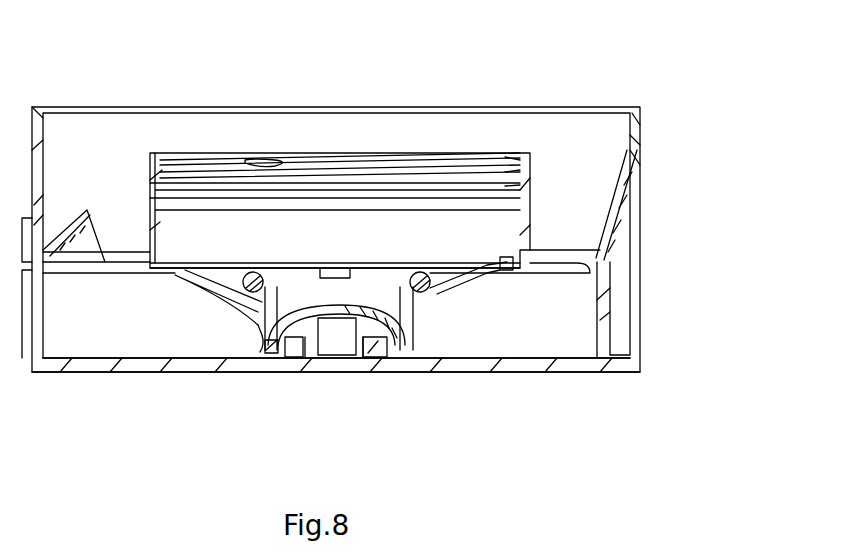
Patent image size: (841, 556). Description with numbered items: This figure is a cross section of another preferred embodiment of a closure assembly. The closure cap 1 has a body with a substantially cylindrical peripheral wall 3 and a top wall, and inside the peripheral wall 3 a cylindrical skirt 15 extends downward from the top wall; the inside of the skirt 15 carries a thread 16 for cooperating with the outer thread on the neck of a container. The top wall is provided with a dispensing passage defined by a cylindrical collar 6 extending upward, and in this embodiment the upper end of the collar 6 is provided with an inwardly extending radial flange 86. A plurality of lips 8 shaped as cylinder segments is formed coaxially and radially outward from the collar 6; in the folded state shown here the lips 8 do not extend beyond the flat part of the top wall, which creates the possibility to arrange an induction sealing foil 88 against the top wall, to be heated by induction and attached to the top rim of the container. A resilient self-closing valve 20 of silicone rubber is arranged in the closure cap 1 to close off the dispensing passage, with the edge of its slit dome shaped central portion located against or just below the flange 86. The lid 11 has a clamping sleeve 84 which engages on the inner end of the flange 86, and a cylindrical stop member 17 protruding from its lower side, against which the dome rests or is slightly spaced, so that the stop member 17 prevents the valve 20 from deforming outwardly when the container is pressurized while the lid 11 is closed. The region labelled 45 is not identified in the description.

The closure cap 1 is at (654, 80).
The peripheral wall 3 is at (640, 153).
The cylindrical skirt 15 is at (150, 176).
The thread 16 is at (366, 167).
The foil 88 is at (206, 273).
The lips 8 is at (253, 282).
The cavity 45 is at (498, 262).
The collar 6 is at (410, 330).
The stop member 17 is at (325, 352).
The radial flange 86 is at (270, 345).
The clamping sleeve 84 is at (372, 352).
The self-closing valve 20 is at (265, 335).
The lid 11 is at (520, 372).